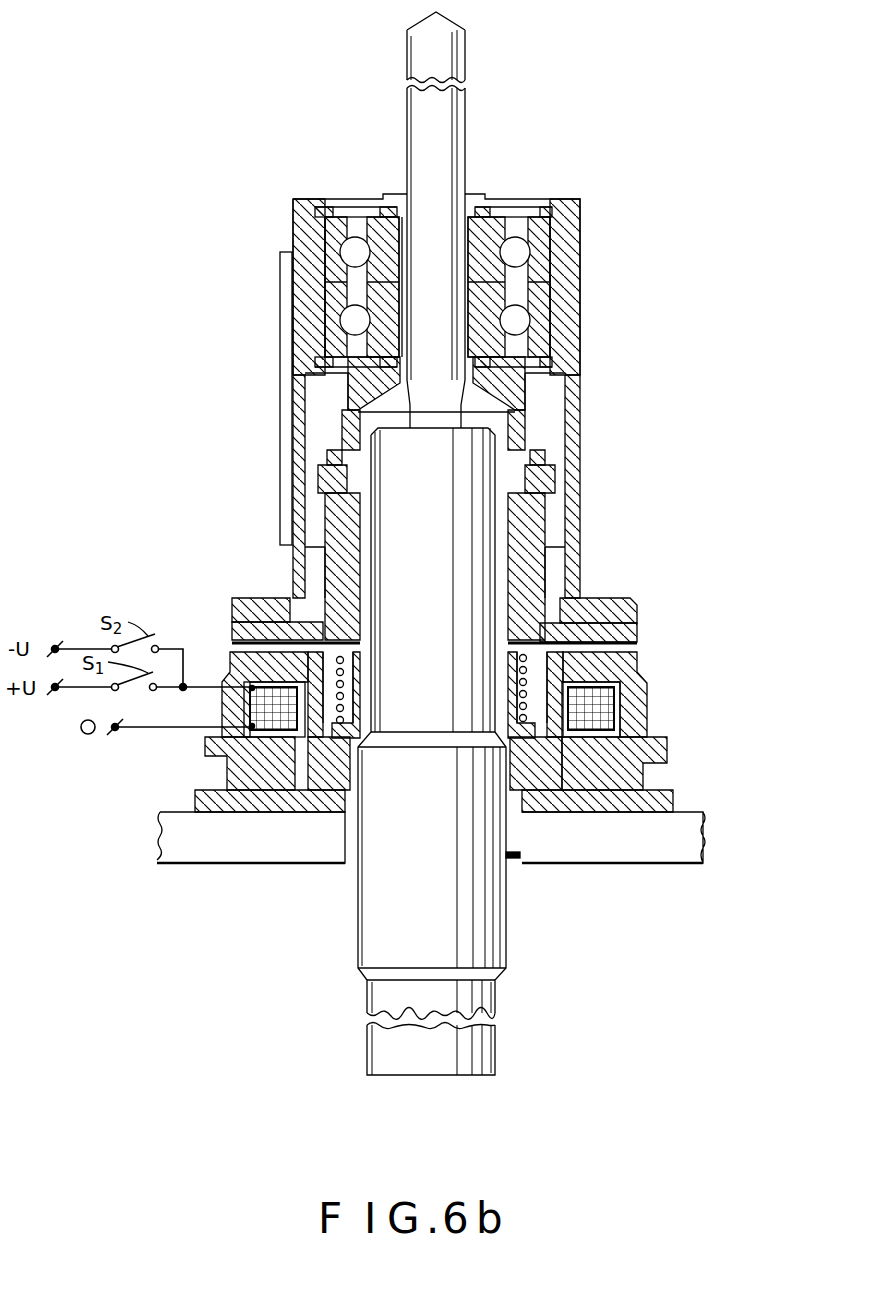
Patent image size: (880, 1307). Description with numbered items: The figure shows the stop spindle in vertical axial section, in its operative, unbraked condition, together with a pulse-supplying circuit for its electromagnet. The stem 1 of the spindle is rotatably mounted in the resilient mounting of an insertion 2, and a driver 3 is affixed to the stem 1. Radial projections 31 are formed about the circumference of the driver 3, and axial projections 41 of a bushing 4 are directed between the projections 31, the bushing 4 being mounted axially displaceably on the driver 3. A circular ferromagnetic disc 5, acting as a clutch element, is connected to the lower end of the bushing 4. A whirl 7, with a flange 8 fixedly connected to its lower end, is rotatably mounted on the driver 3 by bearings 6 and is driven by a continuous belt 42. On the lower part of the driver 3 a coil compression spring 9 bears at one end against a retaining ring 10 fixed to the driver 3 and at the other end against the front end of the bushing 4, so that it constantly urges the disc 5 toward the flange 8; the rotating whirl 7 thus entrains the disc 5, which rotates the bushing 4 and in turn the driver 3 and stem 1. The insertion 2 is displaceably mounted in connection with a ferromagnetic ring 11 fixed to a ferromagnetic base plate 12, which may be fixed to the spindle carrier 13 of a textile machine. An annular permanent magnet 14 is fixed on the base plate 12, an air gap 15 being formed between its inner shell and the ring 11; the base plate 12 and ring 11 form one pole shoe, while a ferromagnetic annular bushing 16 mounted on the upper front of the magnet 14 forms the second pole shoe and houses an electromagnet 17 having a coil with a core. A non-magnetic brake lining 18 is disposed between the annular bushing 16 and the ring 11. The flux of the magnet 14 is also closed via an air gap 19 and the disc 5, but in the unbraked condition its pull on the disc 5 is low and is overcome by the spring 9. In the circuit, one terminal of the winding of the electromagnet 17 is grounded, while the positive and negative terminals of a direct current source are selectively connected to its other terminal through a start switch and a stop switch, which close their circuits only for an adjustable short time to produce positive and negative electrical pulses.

The stem 1 is at (468, 118).
The insertion 2 is at (503, 930).
The driver 3 is at (510, 397).
The bushing 4 is at (545, 527).
The circular ferromagnetic disc 5 is at (640, 635).
The bearings 6 is at (550, 228).
The whirl 7 is at (575, 283).
The flange 8 is at (612, 605).
The coil compression spring 9 is at (348, 662).
The retaining ring 10 is at (375, 740).
The ferromagnetic ring 11 is at (512, 862).
The ferromagnetic base plate 12 is at (673, 802).
The spindle carrier 13 is at (688, 836).
The permanent magnet 14 is at (230, 778).
The air gap 15 is at (563, 780).
The ferromagnetic annular bushing 16 is at (660, 752).
The electromagnet 17 is at (605, 706).
The non-magnetic brake lining 18 is at (617, 668).
The air gap 19 is at (640, 648).
The radial projections 31 is at (323, 478).
The axial projections 41 is at (548, 462).
The continuous belt 42 is at (280, 318).